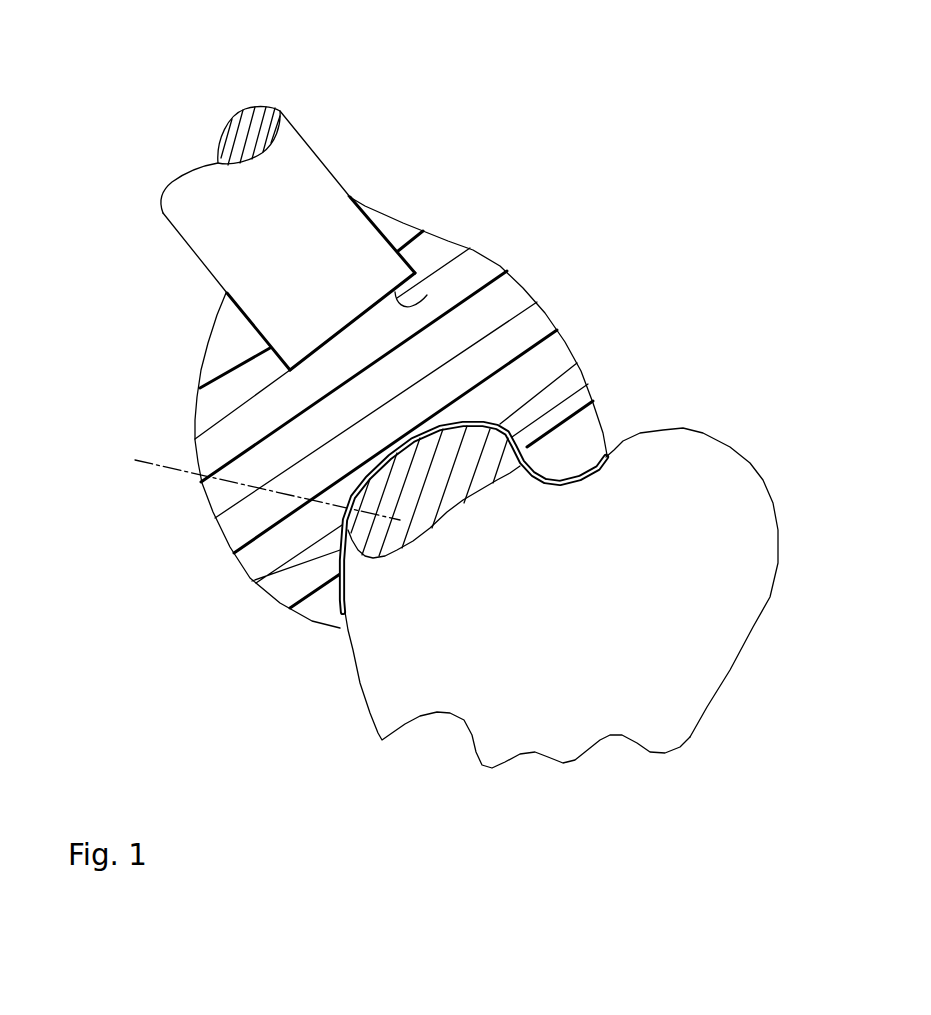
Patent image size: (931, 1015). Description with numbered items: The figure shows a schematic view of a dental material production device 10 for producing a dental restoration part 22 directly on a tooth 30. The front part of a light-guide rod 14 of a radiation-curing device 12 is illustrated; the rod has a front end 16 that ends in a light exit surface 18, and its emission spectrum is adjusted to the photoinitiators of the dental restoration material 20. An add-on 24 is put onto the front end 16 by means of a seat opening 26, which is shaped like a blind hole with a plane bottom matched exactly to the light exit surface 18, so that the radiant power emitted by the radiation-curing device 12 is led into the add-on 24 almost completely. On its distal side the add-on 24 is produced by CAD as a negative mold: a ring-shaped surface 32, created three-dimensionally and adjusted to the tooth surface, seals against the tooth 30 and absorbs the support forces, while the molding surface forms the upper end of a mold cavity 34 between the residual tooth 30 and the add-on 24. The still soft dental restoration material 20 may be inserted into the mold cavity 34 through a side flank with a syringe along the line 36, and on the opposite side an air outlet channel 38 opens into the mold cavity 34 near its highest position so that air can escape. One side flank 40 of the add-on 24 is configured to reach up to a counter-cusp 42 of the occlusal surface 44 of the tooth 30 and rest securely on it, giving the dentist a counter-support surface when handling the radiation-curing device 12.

The dental material production device 10 is at (256, 685).
The radiation-curing device 12 is at (266, 78).
The light-guide rod 14 is at (302, 173).
The front end 16 is at (300, 327).
The light exit surface 18 is at (427, 295).
The dental restoration material 20 is at (254, 578).
The dental restoration part 22 is at (467, 448).
The add-on 24 is at (210, 402).
The seat opening 26 is at (318, 300).
The tooth 30 is at (575, 723).
The ring-shaped surface 32 is at (355, 594).
The mold cavity 34 is at (412, 540).
The line 36 is at (157, 464).
The air outlet channel 38 is at (587, 383).
The side flank 40 is at (590, 437).
The counter-cusp 42 is at (737, 470).
The occlusal surface 44 is at (695, 426).